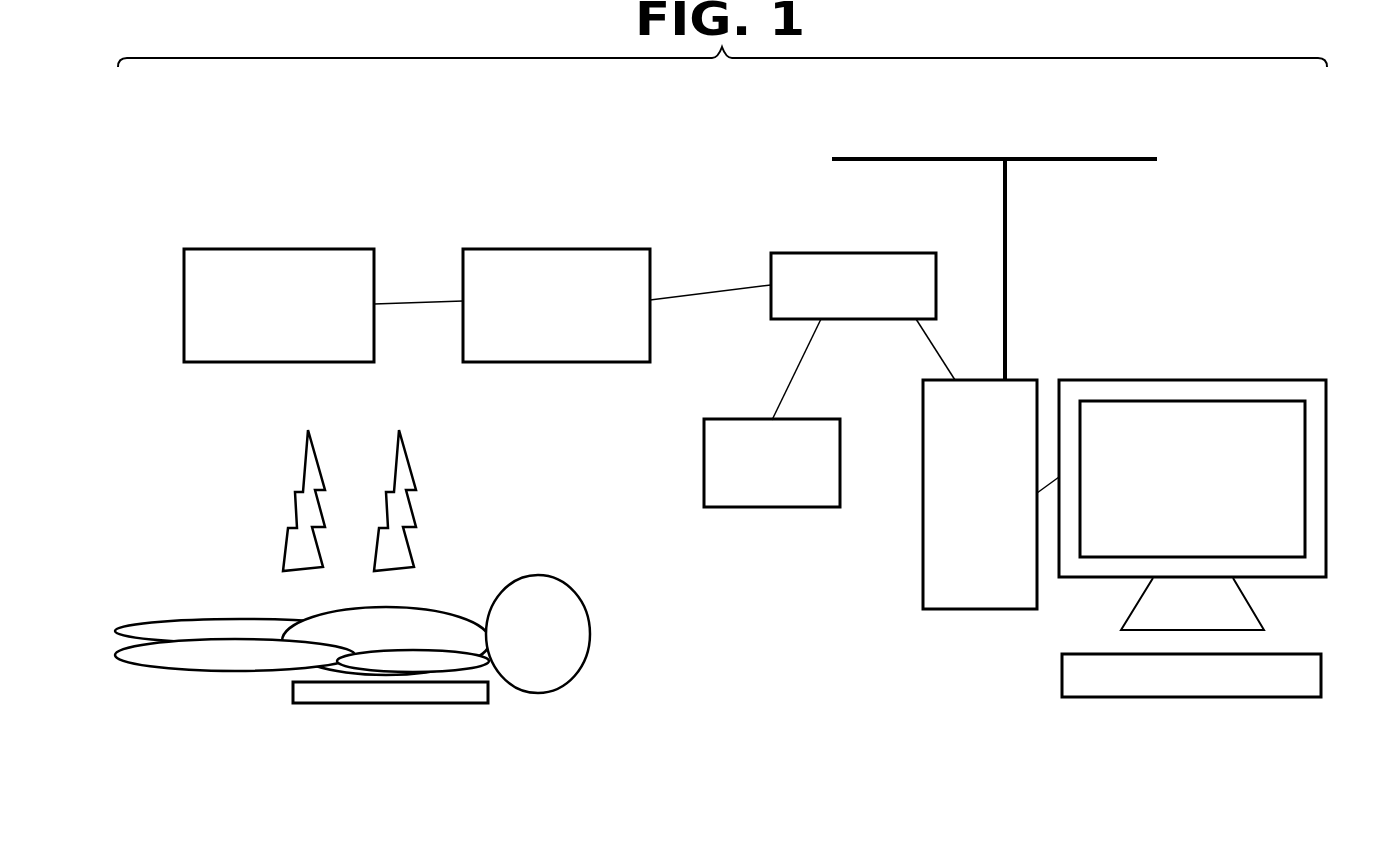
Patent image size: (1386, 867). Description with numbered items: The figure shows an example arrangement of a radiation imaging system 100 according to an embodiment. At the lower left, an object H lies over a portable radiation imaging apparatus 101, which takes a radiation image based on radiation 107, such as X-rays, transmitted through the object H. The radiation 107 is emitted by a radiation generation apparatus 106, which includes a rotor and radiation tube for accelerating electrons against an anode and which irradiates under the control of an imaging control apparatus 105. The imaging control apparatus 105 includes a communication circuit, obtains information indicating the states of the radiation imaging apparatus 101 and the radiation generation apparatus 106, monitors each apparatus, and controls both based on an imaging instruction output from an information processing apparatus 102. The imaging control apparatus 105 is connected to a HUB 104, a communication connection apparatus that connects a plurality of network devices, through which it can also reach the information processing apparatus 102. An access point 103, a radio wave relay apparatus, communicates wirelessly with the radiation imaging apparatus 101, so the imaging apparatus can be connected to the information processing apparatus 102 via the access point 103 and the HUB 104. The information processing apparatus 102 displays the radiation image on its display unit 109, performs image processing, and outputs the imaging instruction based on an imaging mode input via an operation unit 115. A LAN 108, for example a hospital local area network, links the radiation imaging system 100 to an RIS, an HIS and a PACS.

The radiation imaging system 100 is at (232, 146).
The radiation imaging apparatus 101 is at (453, 705).
The information processing apparatus 102 is at (981, 611).
The access point 103 is at (704, 460).
The HUB 104 is at (855, 253).
The imaging control apparatus 105 is at (557, 249).
The radiation generation apparatus 106 is at (280, 249).
The radiation 107 is at (292, 508).
The LAN 108 is at (1007, 303).
The display unit 109 is at (1230, 389).
The operation unit 115 is at (1192, 699).
The object H is at (591, 632).